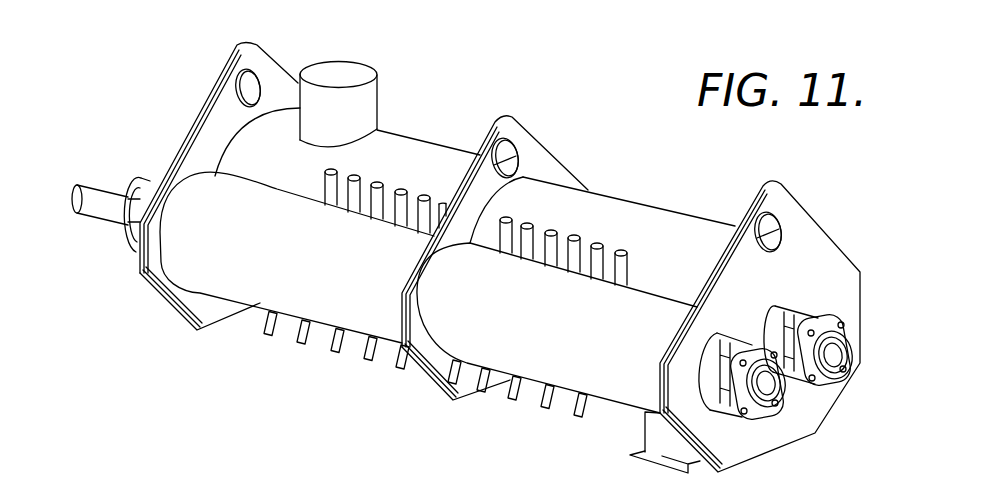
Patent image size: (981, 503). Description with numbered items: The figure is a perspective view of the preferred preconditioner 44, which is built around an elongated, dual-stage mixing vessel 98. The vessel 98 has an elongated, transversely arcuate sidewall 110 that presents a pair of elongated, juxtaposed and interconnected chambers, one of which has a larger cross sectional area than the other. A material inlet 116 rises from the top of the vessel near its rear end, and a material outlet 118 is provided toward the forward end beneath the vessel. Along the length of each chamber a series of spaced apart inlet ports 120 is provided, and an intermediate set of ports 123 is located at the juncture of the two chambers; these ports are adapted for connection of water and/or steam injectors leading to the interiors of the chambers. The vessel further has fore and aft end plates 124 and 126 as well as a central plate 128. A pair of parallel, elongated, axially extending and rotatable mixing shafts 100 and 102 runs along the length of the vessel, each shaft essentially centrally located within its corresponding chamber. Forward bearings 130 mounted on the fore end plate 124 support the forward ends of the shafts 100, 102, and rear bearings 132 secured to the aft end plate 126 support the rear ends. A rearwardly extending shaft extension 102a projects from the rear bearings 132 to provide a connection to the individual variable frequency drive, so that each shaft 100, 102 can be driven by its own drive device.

The preconditioner 44 is at (575, 79).
The mixing vessel 98 is at (691, 209).
The mixing shaft 100 is at (845, 357).
The mixing shaft 102 is at (775, 383).
The shaft extension 102a is at (102, 207).
The sidewall 110 is at (418, 158).
The material inlet 116 is at (348, 72).
The material outlet 118 is at (653, 440).
The inlet ports 120 is at (372, 352).
The intermediate set of ports 123 is at (553, 231).
The fore end plate 124 is at (797, 226).
The aft end plate 126 is at (210, 92).
The central plate 128 is at (503, 123).
The forward bearings 130 is at (790, 312).
The rear bearings 132 is at (143, 181).